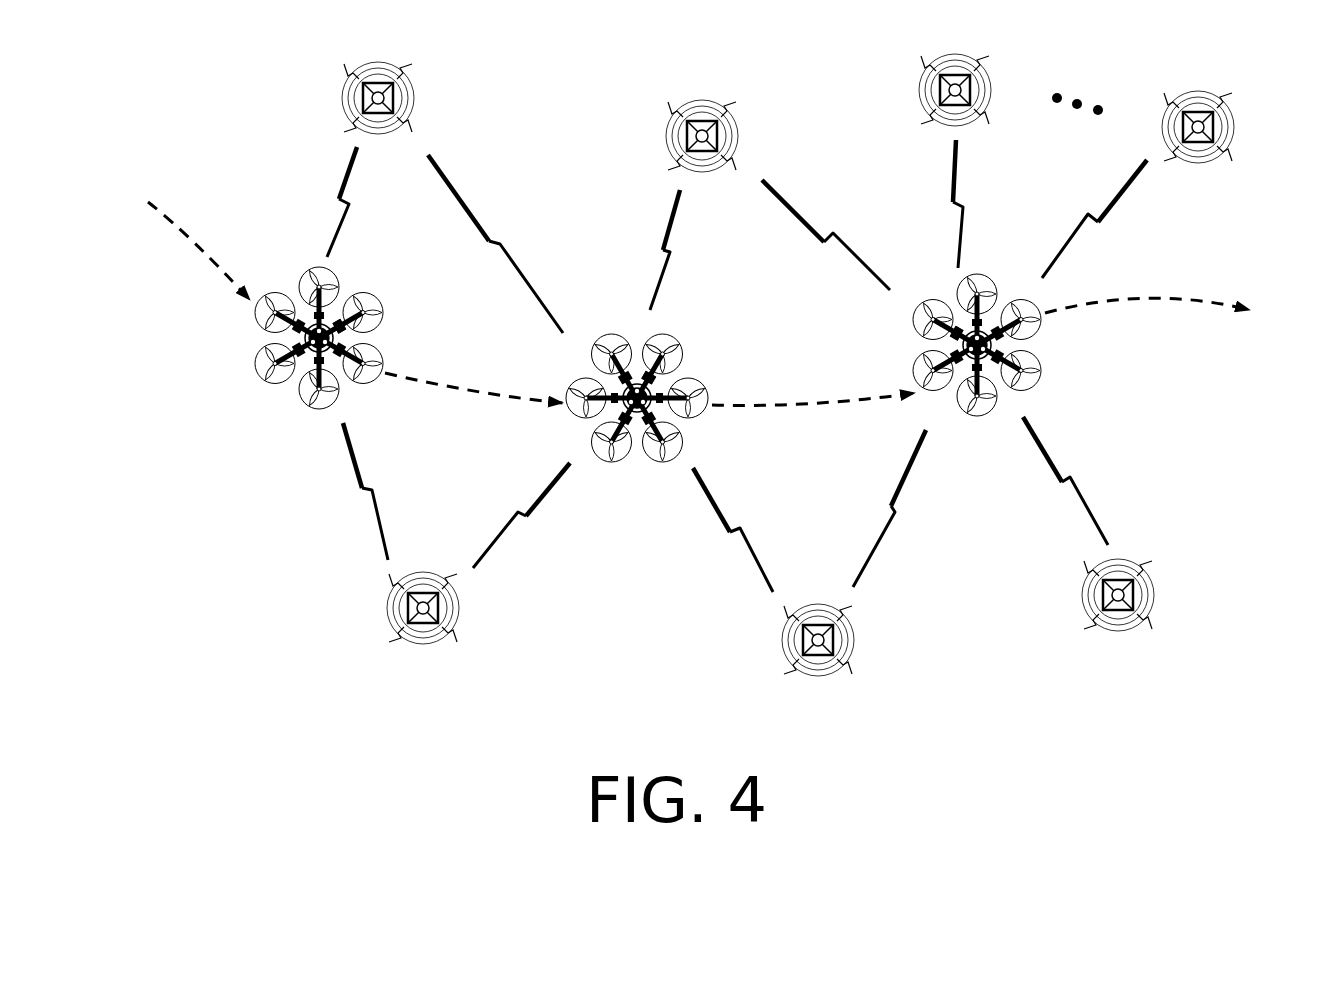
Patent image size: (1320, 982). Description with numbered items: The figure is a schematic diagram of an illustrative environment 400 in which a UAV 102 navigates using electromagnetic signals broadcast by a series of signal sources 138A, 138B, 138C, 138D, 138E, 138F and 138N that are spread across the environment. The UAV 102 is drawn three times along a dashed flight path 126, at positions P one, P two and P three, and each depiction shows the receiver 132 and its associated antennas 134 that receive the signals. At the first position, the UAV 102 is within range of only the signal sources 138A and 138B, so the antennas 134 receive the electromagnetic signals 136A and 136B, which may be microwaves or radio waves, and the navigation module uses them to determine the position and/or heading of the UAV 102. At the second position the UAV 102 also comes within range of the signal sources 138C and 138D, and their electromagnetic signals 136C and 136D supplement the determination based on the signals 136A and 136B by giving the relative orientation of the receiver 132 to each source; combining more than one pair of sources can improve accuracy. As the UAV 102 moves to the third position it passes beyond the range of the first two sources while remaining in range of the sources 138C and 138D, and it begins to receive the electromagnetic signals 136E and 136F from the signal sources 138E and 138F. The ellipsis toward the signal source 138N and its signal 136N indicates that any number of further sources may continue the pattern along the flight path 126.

The environment 400 is at (823, 62).
The UAV 102 is at (358, 312).
The receiver 132 is at (326, 330).
The antennas 134 is at (338, 322).
The flight path 126 is at (185, 228).
The electromagnetic signal 136A is at (349, 201).
The electromagnetic signal 136B is at (358, 492).
The electromagnetic signal 136C is at (662, 250).
The electromagnetic signal 136D is at (730, 533).
The electromagnetic signal 136E is at (955, 204).
The electromagnetic signal 136F is at (1061, 481).
The electromagnetic signal 136N is at (1095, 216).
The signal source 138A is at (383, 92).
The signal source 138B is at (427, 618).
The signal source 138C is at (707, 125).
The signal source 138D is at (821, 650).
The signal source 138E is at (959, 78).
The signal source 138F is at (1121, 606).
The signal source 138N is at (1203, 116).